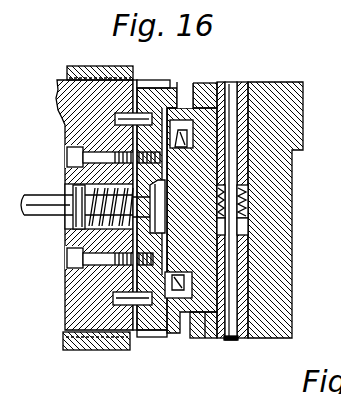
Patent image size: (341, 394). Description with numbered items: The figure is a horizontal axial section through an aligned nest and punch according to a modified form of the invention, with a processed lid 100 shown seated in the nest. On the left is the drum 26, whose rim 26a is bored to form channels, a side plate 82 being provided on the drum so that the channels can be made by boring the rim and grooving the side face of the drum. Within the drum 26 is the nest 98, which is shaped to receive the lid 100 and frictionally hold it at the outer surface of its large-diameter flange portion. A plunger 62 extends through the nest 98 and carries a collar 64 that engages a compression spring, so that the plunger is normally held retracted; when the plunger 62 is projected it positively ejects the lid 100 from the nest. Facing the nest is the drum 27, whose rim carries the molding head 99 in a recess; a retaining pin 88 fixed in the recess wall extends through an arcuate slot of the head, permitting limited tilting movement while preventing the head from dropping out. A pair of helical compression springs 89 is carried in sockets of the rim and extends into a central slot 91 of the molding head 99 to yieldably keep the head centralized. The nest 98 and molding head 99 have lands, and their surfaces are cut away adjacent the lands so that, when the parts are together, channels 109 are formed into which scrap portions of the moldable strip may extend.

The drum 26 is at (57, 82).
The side plate 82 is at (85, 67).
The channel 109 is at (180, 130).
The collar 64 is at (72, 188).
The plunger 62 is at (50, 216).
The lid 100 is at (67, 239).
The rim 26a is at (63, 323).
The nest 98 is at (157, 323).
The molding head 99 is at (205, 305).
The retaining pin 88 is at (231, 341).
The drum 27 is at (301, 324).
The helical compression spring 89 is at (248, 206).
The central slot 91 is at (247, 231).